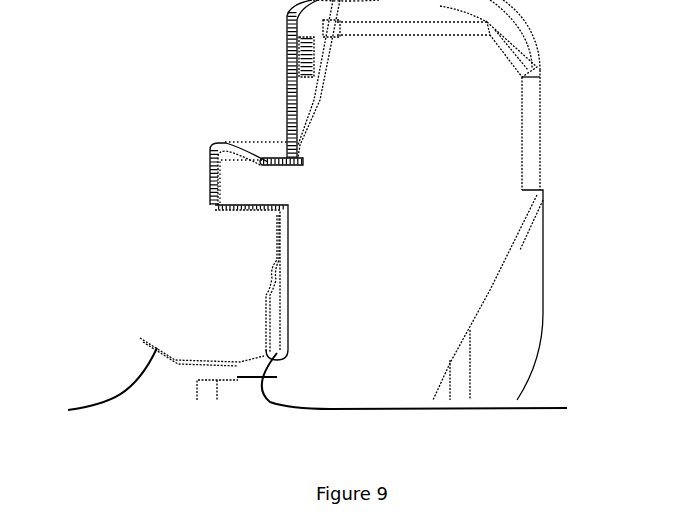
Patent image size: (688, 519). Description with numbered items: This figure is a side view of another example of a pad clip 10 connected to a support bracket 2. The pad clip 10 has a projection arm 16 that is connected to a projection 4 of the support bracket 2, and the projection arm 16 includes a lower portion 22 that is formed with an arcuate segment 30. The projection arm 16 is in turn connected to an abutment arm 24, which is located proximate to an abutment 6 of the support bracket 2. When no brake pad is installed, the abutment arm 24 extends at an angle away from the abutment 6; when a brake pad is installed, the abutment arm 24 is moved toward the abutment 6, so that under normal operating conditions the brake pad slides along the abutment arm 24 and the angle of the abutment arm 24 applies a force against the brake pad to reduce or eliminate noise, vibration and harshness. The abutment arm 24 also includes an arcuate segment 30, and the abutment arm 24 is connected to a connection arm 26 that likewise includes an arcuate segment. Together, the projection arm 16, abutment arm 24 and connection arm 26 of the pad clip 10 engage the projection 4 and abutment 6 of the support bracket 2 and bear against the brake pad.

The pad clip 10 is at (276, 73).
The projection arm 16 is at (199, 138).
The lower portion 22 is at (222, 204).
The arcuate segment 30 is at (267, 285).
The connection arm 26 is at (87, 383).
The support bracket 2 is at (485, 128).
The projection 4 is at (257, 190).
The abutment 6 is at (270, 270).
The abutment arm 24 is at (270, 333).